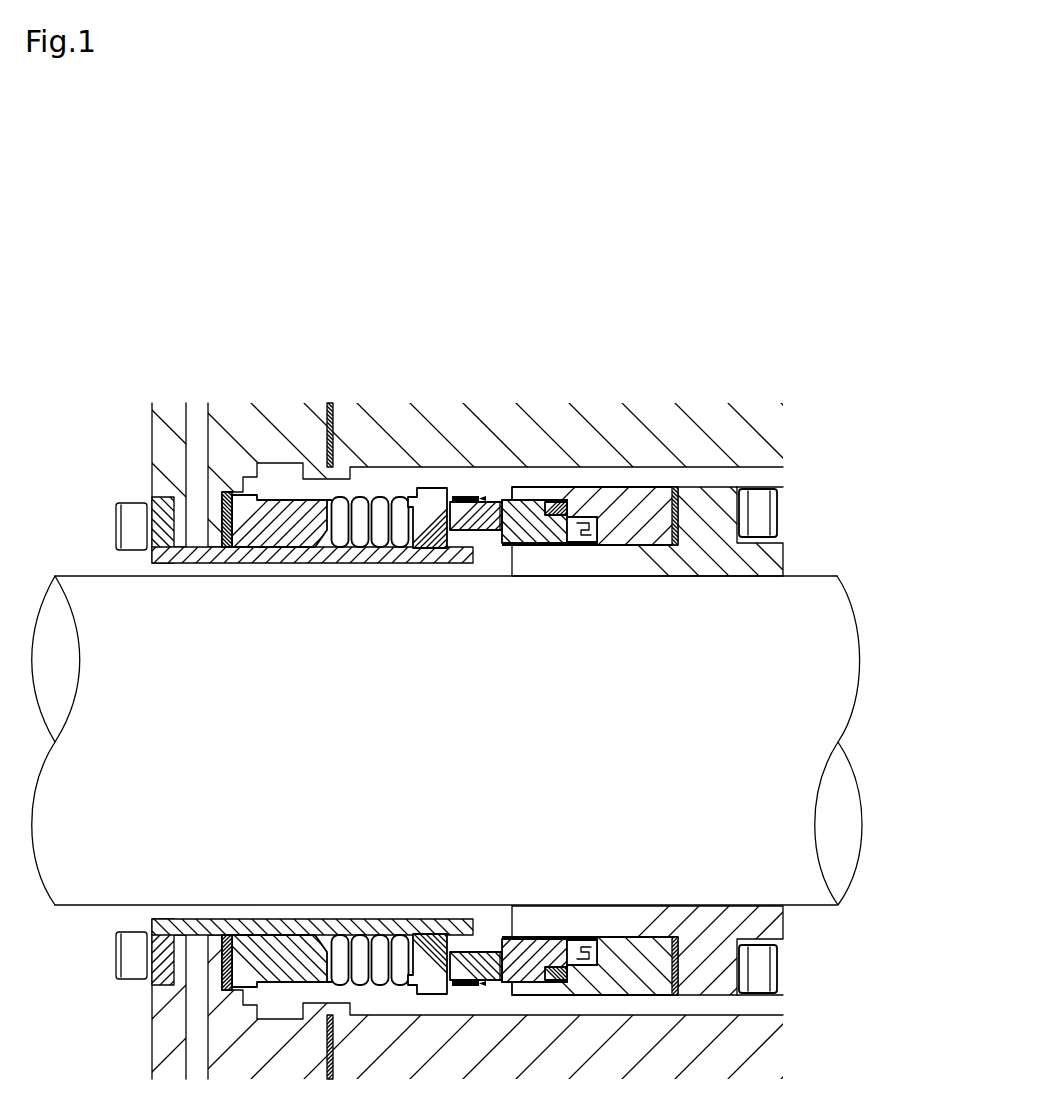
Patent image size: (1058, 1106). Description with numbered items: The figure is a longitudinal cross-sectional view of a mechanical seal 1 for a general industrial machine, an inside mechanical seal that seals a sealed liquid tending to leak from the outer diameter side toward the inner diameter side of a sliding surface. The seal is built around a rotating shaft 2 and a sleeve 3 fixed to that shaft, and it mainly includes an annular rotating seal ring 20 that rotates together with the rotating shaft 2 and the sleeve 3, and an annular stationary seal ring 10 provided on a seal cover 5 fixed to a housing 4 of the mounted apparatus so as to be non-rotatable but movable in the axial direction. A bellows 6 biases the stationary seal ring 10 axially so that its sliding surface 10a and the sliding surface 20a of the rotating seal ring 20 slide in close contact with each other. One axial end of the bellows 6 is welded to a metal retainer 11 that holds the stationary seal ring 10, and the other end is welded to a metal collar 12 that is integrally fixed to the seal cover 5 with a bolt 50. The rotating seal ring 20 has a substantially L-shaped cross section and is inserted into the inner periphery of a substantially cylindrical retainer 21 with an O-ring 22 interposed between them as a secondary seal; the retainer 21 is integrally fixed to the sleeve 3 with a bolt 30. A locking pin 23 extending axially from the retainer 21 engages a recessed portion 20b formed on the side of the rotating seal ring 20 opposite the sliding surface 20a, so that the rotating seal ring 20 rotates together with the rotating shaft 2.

The mechanical seal 1 is at (130, 457).
The rotating shaft 2 is at (835, 658).
The sleeve 3 is at (718, 498).
The housing 4 is at (740, 417).
The seal cover 5 is at (165, 413).
The bellows 6 is at (368, 498).
The stationary seal ring 10 is at (500, 494).
The sliding surface 10a is at (510, 531).
The retainer 11 is at (447, 498).
The collar 12 is at (277, 497).
The rotating seal ring 20 is at (540, 488).
The sliding surface 20a is at (490, 535).
The recessed portion 20b is at (590, 498).
The retainer 21 is at (635, 497).
The O-ring 22 is at (553, 513).
The locking pin 23 is at (587, 520).
The bolt 30 is at (760, 513).
The bolt 50 is at (127, 527).